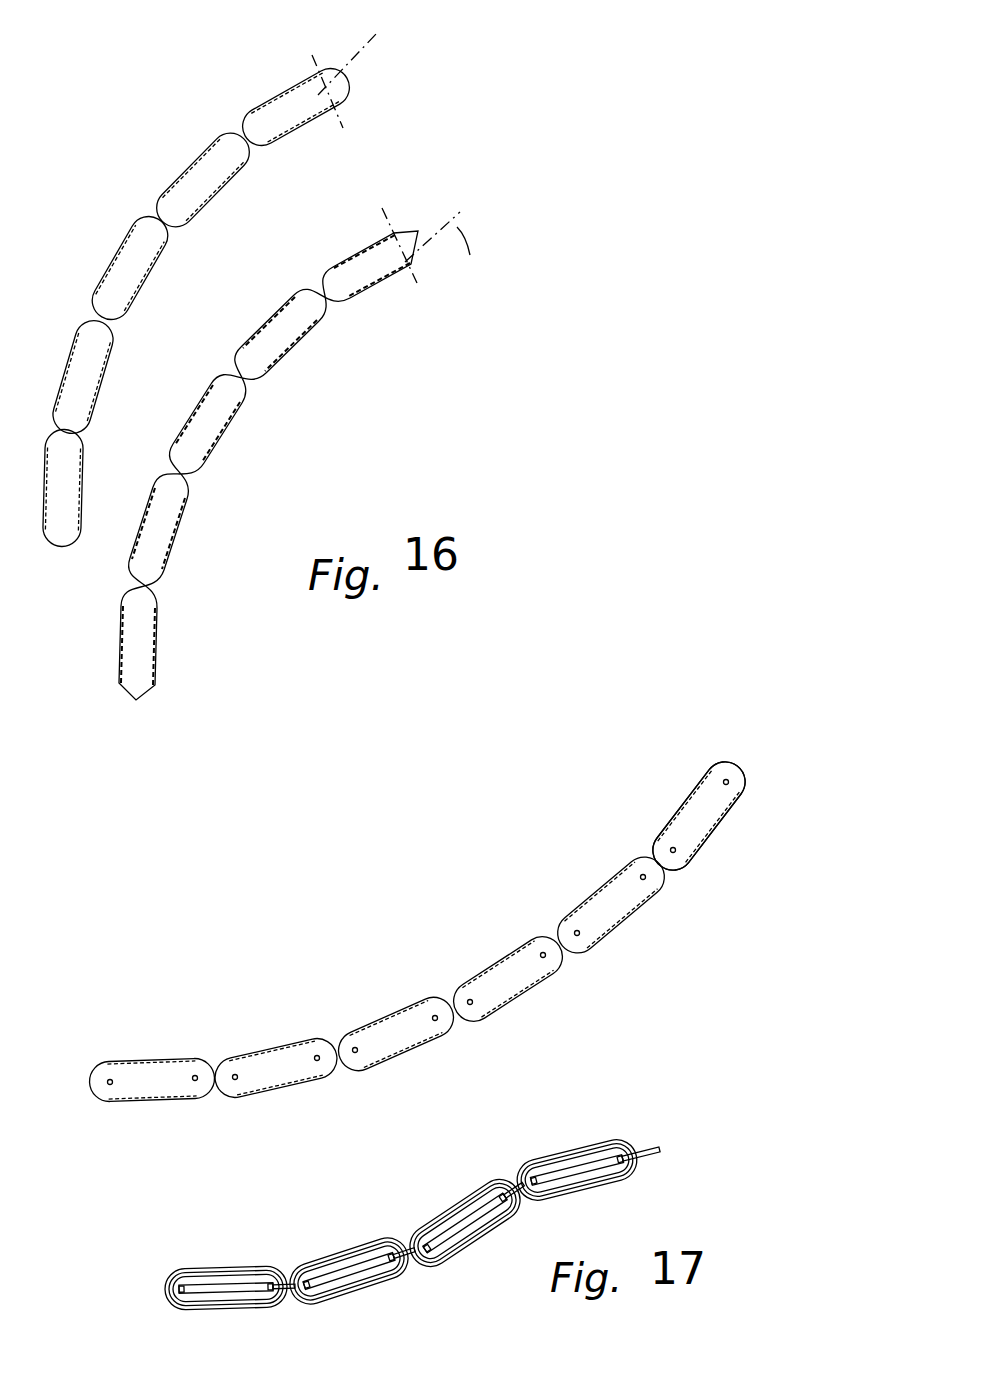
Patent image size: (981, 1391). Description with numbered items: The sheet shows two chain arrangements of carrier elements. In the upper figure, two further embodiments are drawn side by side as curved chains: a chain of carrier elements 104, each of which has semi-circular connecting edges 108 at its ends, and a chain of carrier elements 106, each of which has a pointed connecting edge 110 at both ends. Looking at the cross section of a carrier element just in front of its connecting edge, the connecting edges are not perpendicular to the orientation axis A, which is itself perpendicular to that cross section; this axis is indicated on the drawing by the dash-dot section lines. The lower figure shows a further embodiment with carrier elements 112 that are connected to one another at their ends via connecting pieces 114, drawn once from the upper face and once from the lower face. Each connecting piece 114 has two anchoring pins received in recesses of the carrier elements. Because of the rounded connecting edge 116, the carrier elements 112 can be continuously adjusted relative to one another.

In FIG. 16, the carrier element 104 is at (197, 190).
In FIG. 16, the carrier element 106 is at (272, 339).
In FIG. 16, the semi-circular connecting edge 108 is at (350, 73).
In FIG. 16, the pointed connecting edge 110 is at (426, 228).
In FIG. 17, the carrier element 112 is at (607, 910).
In FIG. 17, the connecting piece 114 is at (517, 1186).
In FIG. 17, the rounded connecting edge 116 is at (748, 766).